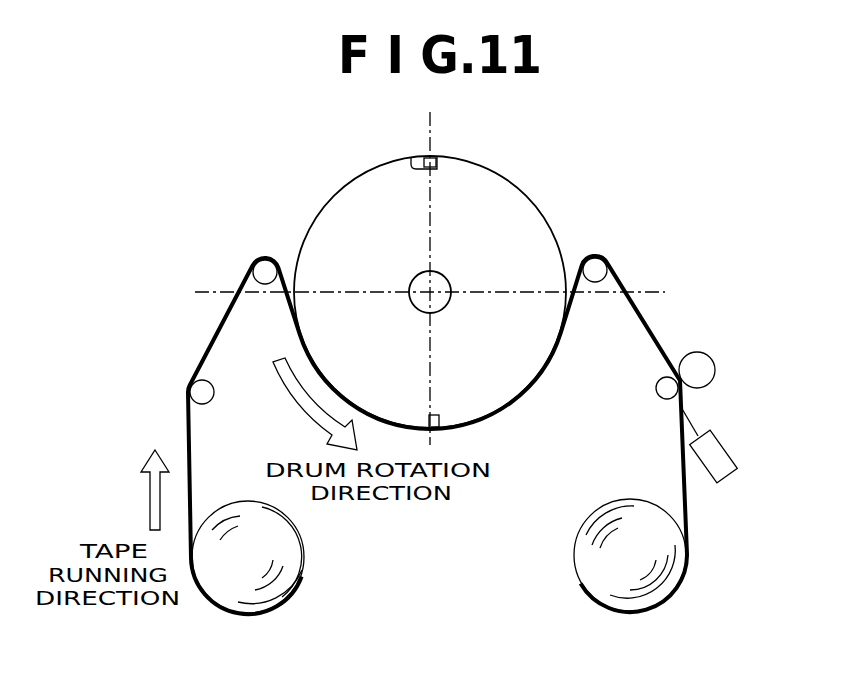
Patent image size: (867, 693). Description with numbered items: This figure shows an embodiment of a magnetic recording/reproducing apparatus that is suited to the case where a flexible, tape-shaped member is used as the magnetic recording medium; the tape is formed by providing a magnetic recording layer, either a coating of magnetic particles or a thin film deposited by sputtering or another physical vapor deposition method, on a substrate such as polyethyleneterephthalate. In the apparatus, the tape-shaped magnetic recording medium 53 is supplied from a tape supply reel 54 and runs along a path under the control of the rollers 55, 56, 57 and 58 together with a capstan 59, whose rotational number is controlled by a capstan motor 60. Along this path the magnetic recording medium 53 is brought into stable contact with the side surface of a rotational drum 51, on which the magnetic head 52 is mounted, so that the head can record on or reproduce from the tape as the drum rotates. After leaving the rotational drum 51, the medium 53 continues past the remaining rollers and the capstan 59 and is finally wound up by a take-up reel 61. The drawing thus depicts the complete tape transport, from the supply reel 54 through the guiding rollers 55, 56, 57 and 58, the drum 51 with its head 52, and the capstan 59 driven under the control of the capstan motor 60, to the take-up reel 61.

The rotational drum 51 is at (515, 210).
The magnetic head 52 is at (420, 158).
The tape-shaped magnetic recording medium 53 is at (215, 328).
The tape supply reel 54 is at (303, 572).
The roller 55 is at (189, 391).
The roller 56 is at (263, 266).
The roller 57 is at (600, 270).
The roller 58 is at (703, 370).
The capstan 59 is at (668, 390).
The capstan motor 60 is at (727, 460).
The take-up reel 61 is at (688, 564).